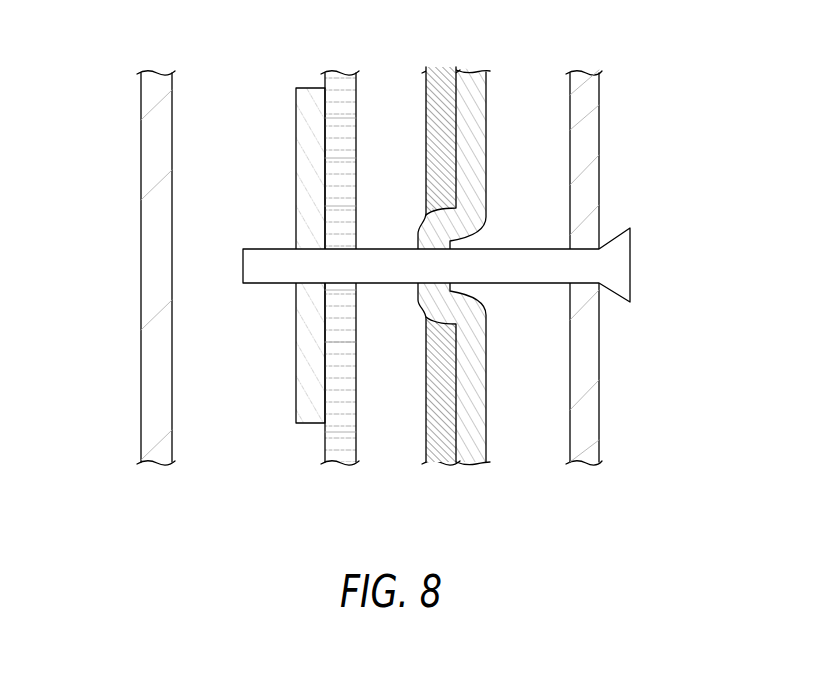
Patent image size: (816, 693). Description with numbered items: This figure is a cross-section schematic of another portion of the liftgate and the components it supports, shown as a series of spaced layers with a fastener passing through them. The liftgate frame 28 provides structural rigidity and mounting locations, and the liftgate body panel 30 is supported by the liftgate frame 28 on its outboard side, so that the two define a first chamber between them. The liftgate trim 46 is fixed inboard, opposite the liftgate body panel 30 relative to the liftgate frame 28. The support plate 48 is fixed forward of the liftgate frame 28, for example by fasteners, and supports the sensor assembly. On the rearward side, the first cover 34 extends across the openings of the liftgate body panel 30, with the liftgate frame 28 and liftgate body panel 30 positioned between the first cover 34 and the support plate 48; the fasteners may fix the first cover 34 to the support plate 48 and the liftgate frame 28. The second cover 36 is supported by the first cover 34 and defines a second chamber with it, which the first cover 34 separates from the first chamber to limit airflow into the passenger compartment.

The liftgate frame 28 is at (356, 412).
The liftgate body panel 30 is at (426, 118).
The first cover 34 is at (486, 118).
The second cover 36 is at (599, 128).
The liftgate trim 46 is at (141, 144).
The support plate 48 is at (296, 122).